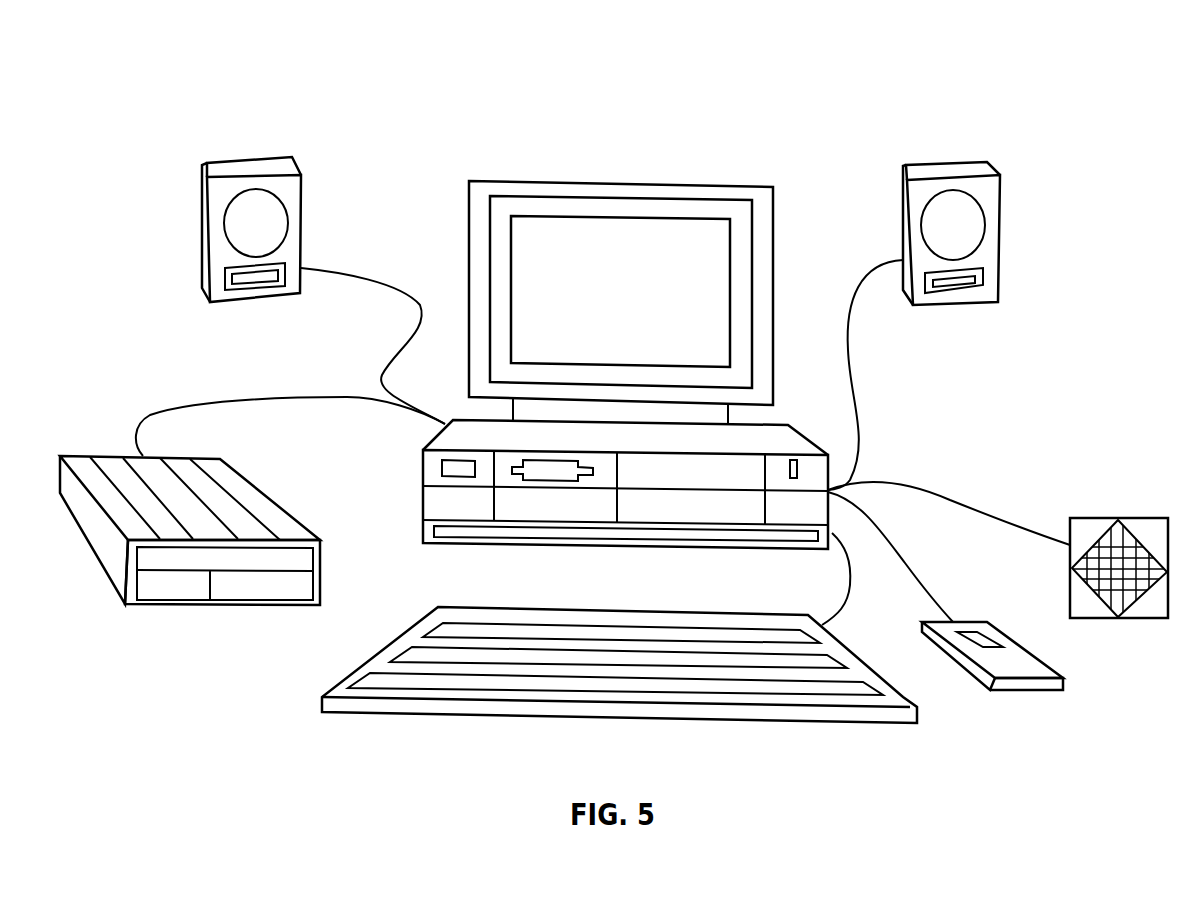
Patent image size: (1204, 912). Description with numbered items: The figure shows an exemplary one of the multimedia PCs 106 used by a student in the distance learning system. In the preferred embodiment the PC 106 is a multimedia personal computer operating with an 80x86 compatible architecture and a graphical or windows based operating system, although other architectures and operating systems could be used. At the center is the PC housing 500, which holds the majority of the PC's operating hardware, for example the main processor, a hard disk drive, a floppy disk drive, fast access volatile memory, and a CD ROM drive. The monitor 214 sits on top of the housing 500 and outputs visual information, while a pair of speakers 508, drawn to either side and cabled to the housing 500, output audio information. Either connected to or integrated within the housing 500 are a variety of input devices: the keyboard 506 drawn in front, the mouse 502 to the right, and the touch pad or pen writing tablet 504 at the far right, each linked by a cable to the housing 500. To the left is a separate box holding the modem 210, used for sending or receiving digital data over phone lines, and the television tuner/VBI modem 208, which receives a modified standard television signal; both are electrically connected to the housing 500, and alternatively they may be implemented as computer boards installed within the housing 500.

The multimedia PC 106 is at (623, 392).
The monitor 214 is at (735, 182).
The PC housing 500 is at (787, 421).
The speakers 508 is at (206, 215).
The modem 210 is at (263, 488).
The television tuner card/VBI modem 208 is at (310, 577).
The keyboard 506 is at (327, 690).
The mouse 502 is at (970, 620).
The touch pad or pen writing tablet 504 is at (1105, 517).